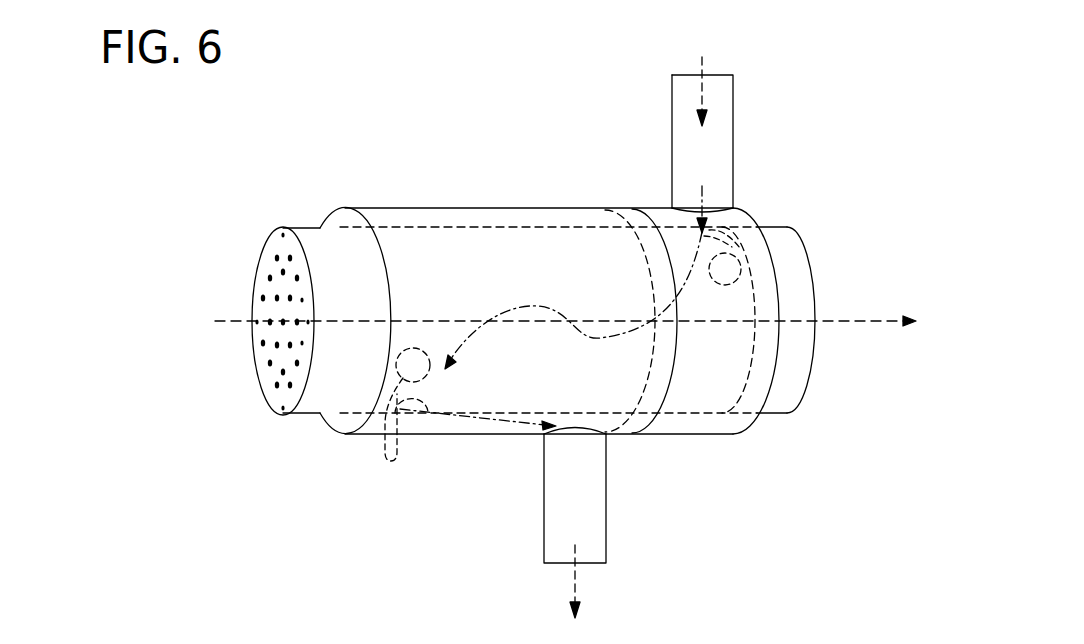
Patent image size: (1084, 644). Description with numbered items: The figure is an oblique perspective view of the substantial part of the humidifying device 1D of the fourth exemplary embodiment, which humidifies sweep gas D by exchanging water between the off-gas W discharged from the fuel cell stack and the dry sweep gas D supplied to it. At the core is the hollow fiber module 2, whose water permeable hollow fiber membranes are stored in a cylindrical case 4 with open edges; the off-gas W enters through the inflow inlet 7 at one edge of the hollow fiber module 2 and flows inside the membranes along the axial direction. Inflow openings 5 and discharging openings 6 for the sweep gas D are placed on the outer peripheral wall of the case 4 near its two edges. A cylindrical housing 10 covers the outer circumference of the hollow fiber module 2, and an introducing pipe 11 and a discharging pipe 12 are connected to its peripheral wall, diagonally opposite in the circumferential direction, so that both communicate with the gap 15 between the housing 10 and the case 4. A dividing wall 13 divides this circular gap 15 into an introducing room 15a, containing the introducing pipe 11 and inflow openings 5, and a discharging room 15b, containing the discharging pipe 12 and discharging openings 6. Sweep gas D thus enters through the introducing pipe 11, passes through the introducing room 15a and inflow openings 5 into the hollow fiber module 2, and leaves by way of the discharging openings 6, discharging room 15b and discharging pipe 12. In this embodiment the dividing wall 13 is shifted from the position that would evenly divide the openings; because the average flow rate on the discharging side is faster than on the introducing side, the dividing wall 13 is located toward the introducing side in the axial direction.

The humidifying device 1D is at (309, 174).
The hollow fiber module 2 is at (283, 227).
The case 4 is at (312, 414).
The inflow openings 5 is at (733, 245).
The discharging openings 6 is at (405, 422).
The inflow inlet 7 is at (274, 387).
The housing 10 is at (488, 208).
The introducing pipe 11 is at (733, 167).
The discharging pipe 12 is at (606, 500).
The dividing wall 13 is at (672, 378).
The gap 15 is at (577, 320).
The introducing room 15a is at (722, 425).
The discharging room 15b is at (480, 415).
The sweep gas D is at (700, 60).
The off-gas W is at (850, 326).